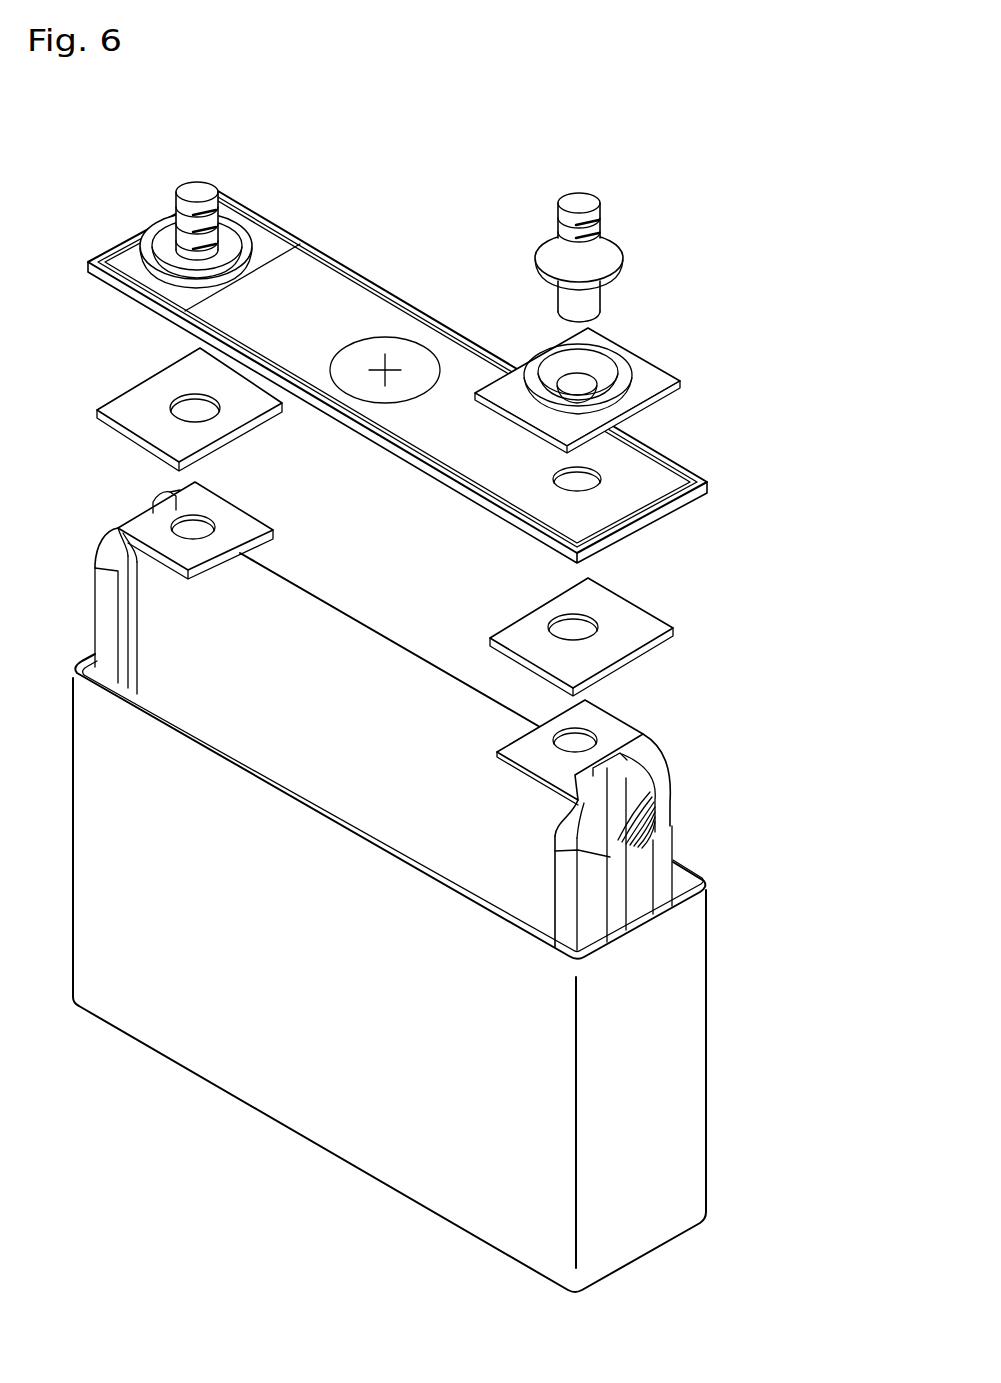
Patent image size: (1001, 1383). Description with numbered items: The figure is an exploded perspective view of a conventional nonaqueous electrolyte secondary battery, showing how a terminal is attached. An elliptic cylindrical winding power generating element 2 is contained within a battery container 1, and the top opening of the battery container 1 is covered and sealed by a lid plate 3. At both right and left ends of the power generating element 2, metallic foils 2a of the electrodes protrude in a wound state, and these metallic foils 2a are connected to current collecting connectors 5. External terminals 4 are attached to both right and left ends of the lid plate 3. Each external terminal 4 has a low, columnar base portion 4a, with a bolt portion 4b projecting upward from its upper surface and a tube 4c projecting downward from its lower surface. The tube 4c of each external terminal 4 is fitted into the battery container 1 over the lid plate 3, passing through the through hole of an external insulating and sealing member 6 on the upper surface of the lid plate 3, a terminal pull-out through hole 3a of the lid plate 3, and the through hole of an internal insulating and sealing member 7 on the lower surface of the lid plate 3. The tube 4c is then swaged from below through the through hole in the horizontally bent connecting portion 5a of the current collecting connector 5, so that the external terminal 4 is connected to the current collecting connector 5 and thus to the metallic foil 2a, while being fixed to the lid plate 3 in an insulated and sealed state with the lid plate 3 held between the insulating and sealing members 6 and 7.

The battery container 1 is at (400, 1122).
The power generating element 2 is at (360, 651).
The metallic foil 2a is at (138, 572).
The lid plate 3 is at (375, 322).
The terminal pull-out through hole 3a is at (566, 476).
The external terminal 4 is at (178, 192).
The base portion 4a is at (165, 242).
The bolt portion 4b is at (200, 188).
The tube 4c is at (566, 303).
The current collecting connector 5 is at (107, 524).
The connecting portion 5a is at (236, 522).
The external insulating and sealing member 6 is at (197, 293).
The internal insulating and sealing member 7 is at (147, 397).